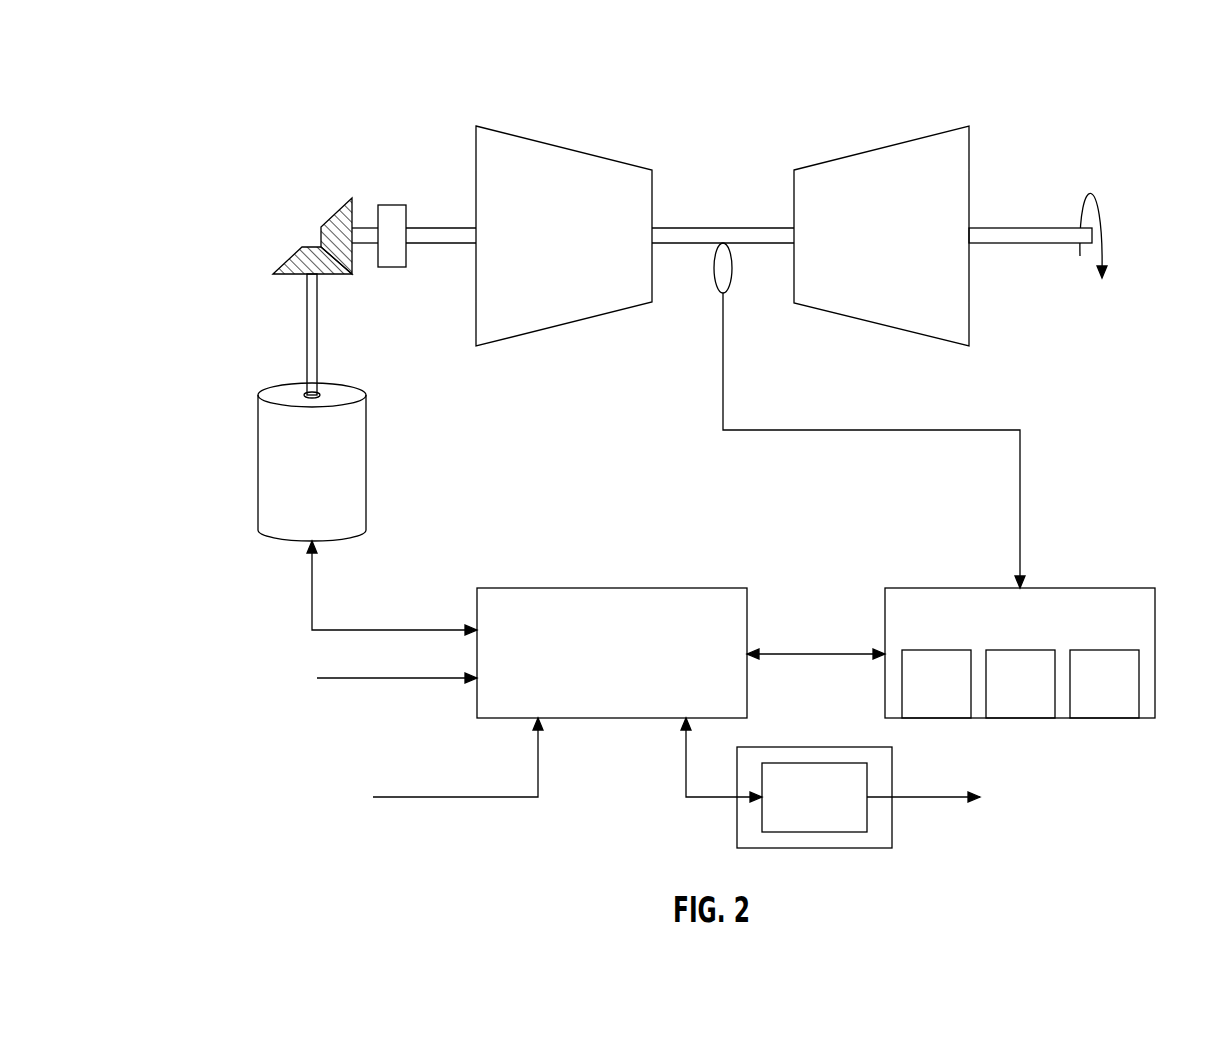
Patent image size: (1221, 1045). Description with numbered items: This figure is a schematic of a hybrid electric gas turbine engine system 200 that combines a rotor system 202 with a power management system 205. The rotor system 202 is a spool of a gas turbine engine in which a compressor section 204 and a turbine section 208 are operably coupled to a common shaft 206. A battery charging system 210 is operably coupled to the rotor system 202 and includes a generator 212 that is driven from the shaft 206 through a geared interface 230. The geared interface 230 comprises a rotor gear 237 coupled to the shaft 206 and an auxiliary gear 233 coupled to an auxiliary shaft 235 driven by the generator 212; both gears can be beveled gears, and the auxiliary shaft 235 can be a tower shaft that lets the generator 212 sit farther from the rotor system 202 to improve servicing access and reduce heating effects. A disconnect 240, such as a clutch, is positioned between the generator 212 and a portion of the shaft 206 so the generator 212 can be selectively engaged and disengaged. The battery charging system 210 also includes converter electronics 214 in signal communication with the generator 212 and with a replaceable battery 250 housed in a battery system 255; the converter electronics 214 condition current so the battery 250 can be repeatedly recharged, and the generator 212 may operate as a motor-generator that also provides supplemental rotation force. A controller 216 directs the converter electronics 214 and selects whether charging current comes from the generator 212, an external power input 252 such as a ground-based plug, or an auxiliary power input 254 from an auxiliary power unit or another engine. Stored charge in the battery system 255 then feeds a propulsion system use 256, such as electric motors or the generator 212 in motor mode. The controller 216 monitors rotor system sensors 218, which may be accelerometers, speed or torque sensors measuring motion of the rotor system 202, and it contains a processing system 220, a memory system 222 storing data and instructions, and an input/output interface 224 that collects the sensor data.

The hybrid electric gas turbine engine system 200 is at (222, 85).
The rotor system 202 is at (789, 113).
The compressor section 204 is at (565, 147).
The power management system 205 is at (1094, 396).
The shaft 206 is at (446, 228).
The turbine section 208 is at (893, 144).
The battery charging system 210 is at (252, 562).
The generator 212 is at (258, 460).
The converter electronics 214 is at (634, 667).
The controller 216 is at (1042, 635).
The rotor system sensors 218 is at (716, 302).
The processing system 220 is at (958, 700).
The memory system 222 is at (1042, 700).
The input/output interface 224 is at (1126, 700).
The geared interface 230 is at (250, 212).
The auxiliary gear 233 is at (288, 261).
The auxiliary shaft 235 is at (307, 340).
The rotor gear 237 is at (334, 212).
The disconnect 240 is at (392, 268).
The replaceable battery 250 is at (836, 812).
The power input 252 is at (428, 800).
The auxiliary power input 254 is at (385, 680).
The battery system 255 is at (864, 746).
The propulsion system use 256 is at (935, 800).